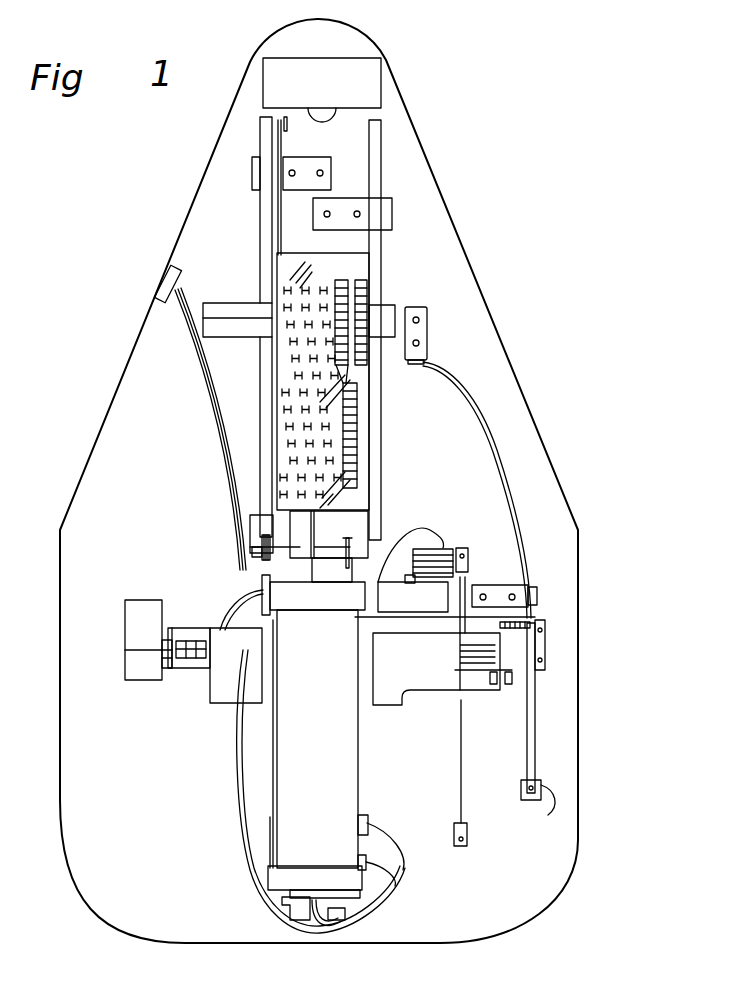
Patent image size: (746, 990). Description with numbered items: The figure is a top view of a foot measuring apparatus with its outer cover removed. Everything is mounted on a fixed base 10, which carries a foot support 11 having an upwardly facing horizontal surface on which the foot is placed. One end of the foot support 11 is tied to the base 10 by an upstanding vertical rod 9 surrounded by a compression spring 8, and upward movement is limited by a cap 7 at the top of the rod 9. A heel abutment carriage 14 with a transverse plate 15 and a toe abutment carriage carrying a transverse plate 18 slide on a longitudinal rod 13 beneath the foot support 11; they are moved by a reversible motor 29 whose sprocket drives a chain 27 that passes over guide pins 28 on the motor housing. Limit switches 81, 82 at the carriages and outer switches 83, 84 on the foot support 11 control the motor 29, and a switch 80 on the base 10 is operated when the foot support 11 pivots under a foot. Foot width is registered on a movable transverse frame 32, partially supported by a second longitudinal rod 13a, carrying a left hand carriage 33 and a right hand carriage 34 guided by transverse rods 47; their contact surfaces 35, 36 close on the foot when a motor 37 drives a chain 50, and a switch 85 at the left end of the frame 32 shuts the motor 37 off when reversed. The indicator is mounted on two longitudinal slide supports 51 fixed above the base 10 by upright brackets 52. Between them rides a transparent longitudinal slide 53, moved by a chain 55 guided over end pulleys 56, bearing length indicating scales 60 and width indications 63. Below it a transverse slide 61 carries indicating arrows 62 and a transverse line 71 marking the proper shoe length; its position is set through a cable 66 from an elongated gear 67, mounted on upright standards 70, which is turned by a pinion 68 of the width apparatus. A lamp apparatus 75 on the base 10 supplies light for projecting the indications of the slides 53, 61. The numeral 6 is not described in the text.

The fixed base 10 is at (512, 392).
The foot support 11 is at (358, 762).
The second longitudinal rod 13a is at (462, 790).
The heel abutment carriage 14 is at (273, 833).
The transverse plate 15 is at (300, 876).
The transverse plate 18 is at (277, 620).
The chain 27 is at (326, 584).
The guide pin 28 is at (352, 545).
The reversible motor 29 is at (250, 547).
The movable transverse frame 32 is at (373, 666).
The left hand carriage 33 is at (226, 705).
The right hand carriage 34 is at (398, 705).
The contact surface 35 is at (262, 687).
The contact surface 36 is at (373, 698).
The motor 37 is at (425, 609).
The transverse rod 47 is at (175, 665).
The chain 50 is at (190, 645).
The slide support 51 is at (262, 366).
The upright bracket 52 is at (350, 200).
The longitudinal slide 53 is at (357, 266).
The chain 55 is at (279, 218).
The end pulley 56 is at (282, 118).
The length indicating scales 60 is at (358, 418).
The movable slide 61 is at (210, 322).
The indicating arrow 62 is at (299, 332).
The width indications 63 is at (290, 413).
The cable 66 is at (497, 460).
The elongated gear 67 is at (533, 805).
The pinion 68 is at (518, 625).
The upright standard 70 is at (427, 343).
The transverse line 71 is at (395, 315).
The lamp apparatus 75 is at (345, 93).
The switch 80 is at (345, 914).
The limit switch 81 is at (372, 884).
The limit switch 82 is at (262, 587).
The outer switch 83 is at (284, 903).
The outer switch 84 is at (336, 566).
The switch 85 is at (130, 672).
The section line 6 is at (277, 0).
The cap 7 is at (300, 517).
The compression spring 8 is at (160, 714).
The vertical rod 9 is at (128, 652).
The longitudinal rod 13 is at (596, 550).